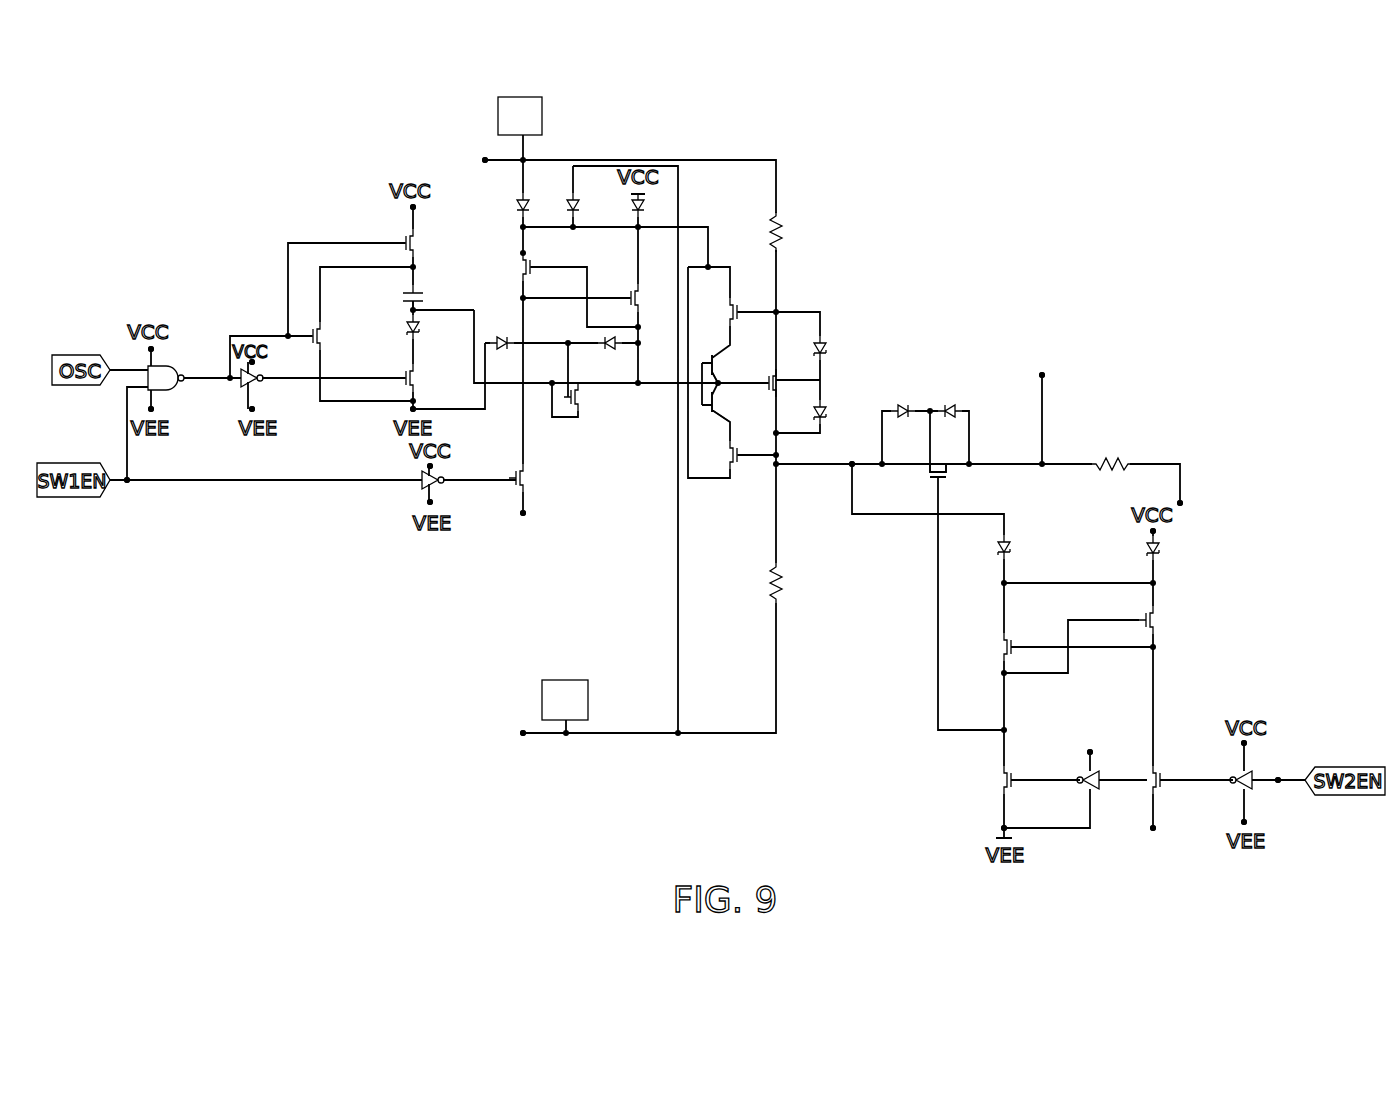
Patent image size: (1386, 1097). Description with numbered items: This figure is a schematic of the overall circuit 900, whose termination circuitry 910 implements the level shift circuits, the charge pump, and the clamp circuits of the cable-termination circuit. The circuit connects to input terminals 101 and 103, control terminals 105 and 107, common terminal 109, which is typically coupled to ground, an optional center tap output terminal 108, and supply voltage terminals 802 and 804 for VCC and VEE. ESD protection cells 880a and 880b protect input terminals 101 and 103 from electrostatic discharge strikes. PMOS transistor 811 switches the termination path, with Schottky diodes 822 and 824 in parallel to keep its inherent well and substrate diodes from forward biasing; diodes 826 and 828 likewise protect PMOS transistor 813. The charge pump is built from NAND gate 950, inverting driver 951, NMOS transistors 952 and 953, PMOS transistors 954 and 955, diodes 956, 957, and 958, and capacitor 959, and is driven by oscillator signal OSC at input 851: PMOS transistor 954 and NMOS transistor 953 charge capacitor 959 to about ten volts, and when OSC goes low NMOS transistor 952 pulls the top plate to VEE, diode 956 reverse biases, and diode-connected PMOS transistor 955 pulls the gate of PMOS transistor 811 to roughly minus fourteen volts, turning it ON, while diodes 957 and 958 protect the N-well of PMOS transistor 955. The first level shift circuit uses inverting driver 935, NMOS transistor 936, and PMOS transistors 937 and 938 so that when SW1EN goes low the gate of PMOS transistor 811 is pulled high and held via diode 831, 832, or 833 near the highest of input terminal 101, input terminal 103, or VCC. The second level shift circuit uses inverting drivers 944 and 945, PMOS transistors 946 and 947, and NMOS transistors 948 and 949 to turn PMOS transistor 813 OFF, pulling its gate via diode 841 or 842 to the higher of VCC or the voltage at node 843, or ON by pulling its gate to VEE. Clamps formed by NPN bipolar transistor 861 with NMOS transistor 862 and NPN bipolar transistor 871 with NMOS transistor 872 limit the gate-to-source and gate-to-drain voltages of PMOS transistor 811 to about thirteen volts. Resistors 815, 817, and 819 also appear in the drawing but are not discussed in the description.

The switch driver circuit 900 is at (1136, 270).
The termination circuitry 910 is at (890, 290).
The input terminal 101 is at (485, 160).
The input terminal 103 is at (523, 733).
The control terminal 105 is at (127, 483).
The control terminal 107 is at (1280, 778).
The center tap output terminal 108 is at (1044, 375).
The common terminal 109 is at (528, 513).
The input supply voltage terminal 802 is at (411, 207).
The input supply voltage terminal 804 is at (408, 409).
The PMOS transistor 811 is at (762, 390).
The PMOS transistor 813 is at (948, 480).
The resistor 815 is at (781, 250).
The resistor 817 is at (781, 585).
The resistor 819 is at (1110, 460).
The diode 822 is at (828, 347).
The diode 824 is at (828, 411).
The diode 826 is at (905, 405).
The diode 828 is at (950, 405).
The diode 831 is at (518, 205).
The diode 832 is at (578, 215).
The diode 833 is at (648, 205).
The diode 841 is at (1148, 552).
The diode 842 is at (1010, 547).
The node 843 is at (852, 468).
The oscillator input 851 is at (132, 372).
The NPN bipolar transistor 861 is at (716, 362).
The NMOS transistor 862 is at (735, 305).
The NPN bipolar transistor 871 is at (711, 414).
The NMOS transistor 872 is at (738, 466).
The ESD protection cell 880a is at (542, 115).
The ESD protection cell 880b is at (566, 680).
The inverting driver 935 is at (428, 488).
The NMOS transistor 936 is at (530, 482).
The PMOS transistor 937 is at (518, 267).
The PMOS transistor 938 is at (646, 298).
The inverting driver 944 is at (1256, 786).
The inverting driver 945 is at (1096, 788).
The PMOS transistor 946 is at (1160, 623).
The PMOS transistor 947 is at (998, 648).
The NMOS transistor 948 is at (1164, 792).
The NMOS transistor 949 is at (998, 780).
The NAND gate 950 is at (170, 368).
The inverting driver 951 is at (262, 385).
The NMOS transistor 952 is at (328, 337).
The NMOS transistor 953 is at (420, 381).
The PMOS transistor 954 is at (420, 243).
The PMOS transistor 955 is at (580, 418).
The diode 956 is at (418, 335).
The diode 957 is at (512, 343).
The diode 958 is at (612, 350).
The capacitor 959 is at (422, 297).